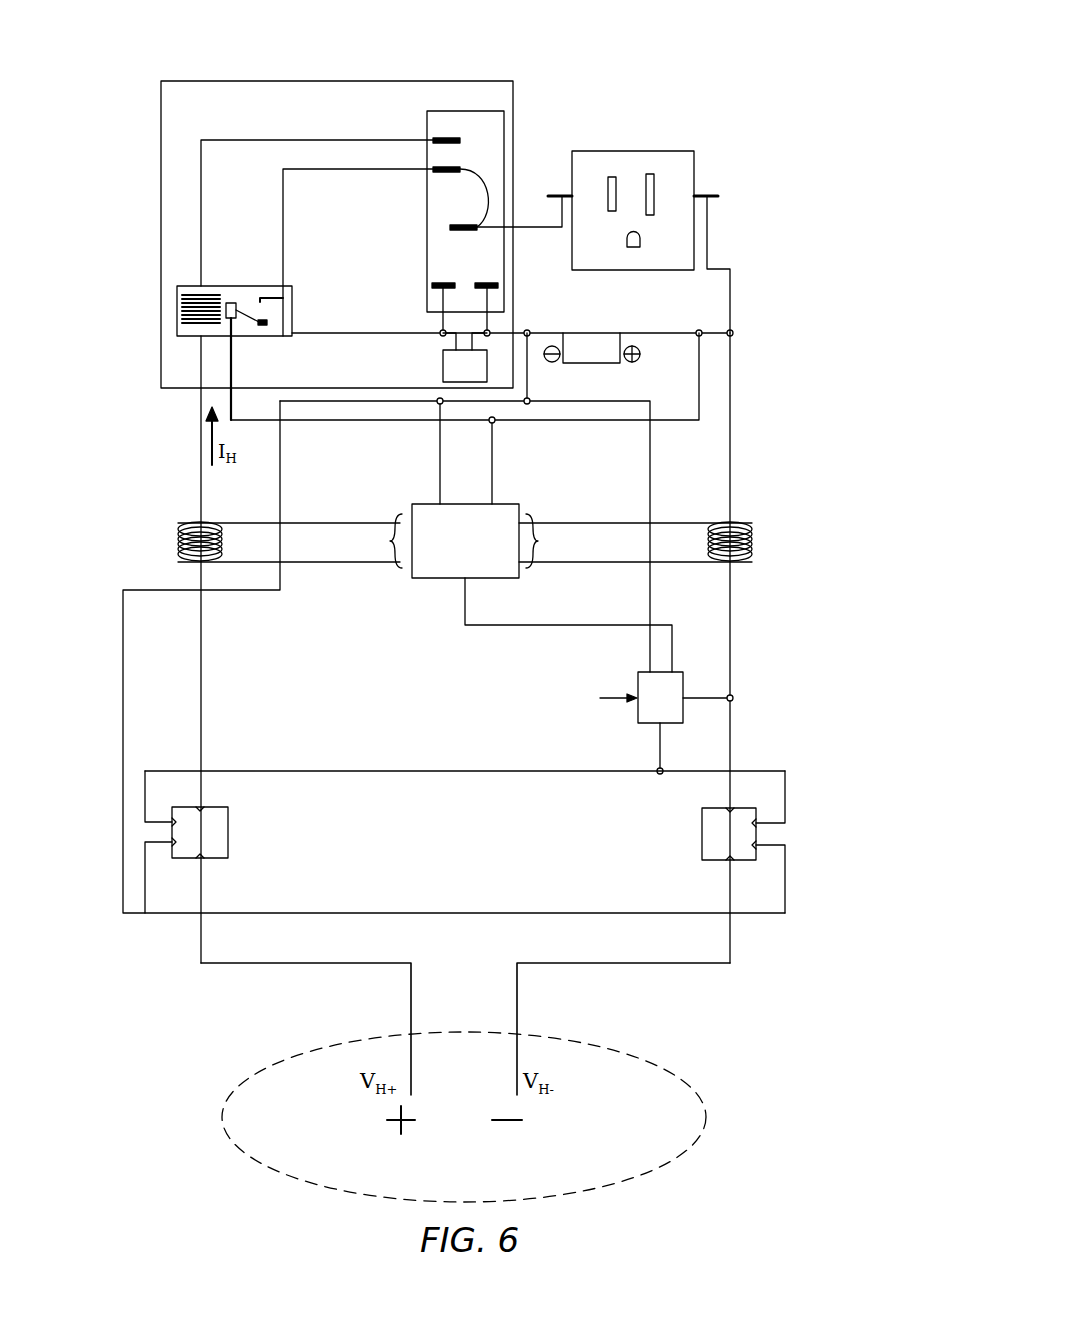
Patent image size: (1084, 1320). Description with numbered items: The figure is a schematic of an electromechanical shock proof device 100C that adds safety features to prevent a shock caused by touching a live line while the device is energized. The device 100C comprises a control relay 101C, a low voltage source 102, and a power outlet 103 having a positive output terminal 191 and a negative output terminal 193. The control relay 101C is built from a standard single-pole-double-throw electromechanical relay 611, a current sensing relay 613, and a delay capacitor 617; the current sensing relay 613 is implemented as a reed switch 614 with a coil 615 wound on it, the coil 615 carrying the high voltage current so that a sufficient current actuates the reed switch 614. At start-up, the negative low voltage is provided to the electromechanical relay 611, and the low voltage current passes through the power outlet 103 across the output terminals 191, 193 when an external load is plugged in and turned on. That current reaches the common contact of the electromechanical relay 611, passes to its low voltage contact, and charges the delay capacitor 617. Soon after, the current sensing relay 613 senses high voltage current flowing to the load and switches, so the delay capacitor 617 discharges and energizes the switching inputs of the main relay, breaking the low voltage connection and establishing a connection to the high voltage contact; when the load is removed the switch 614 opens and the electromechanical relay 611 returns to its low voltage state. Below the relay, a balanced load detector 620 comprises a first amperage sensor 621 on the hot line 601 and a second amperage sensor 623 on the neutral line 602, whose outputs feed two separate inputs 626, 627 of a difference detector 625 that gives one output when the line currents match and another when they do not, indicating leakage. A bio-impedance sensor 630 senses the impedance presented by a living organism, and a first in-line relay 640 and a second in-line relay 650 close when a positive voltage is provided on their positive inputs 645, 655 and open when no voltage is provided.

The electromechanical shock proof device 100C is at (778, 69).
The control relay 101C is at (337, 80).
The low voltage source 102 is at (588, 363).
The power outlet 103 is at (632, 151).
The positive output terminal 191 is at (560, 192).
The negative output terminal 193 is at (706, 192).
The hot line 601 is at (198, 445).
The neutral line 602 is at (733, 446).
The electromechanical relay 611 is at (427, 236).
The current sensing relay 613 is at (217, 284).
The reed switch 614 is at (240, 307).
The coil 615 is at (188, 292).
The delay capacitor 617 is at (443, 368).
The balanced load detector 620 is at (489, 534).
The first amperage sensor 621 is at (180, 522).
The second amperage sensor 623 is at (750, 524).
The difference detector 625 is at (513, 500).
The first input 626 is at (290, 541).
The second input 627 is at (635, 541).
The bio-impedance sensor 630 is at (638, 718).
The first in-line relay 640 is at (228, 820).
The positive input 645 is at (172, 830).
The second in-line relay 650 is at (702, 825).
The positive input 655 is at (756, 832).